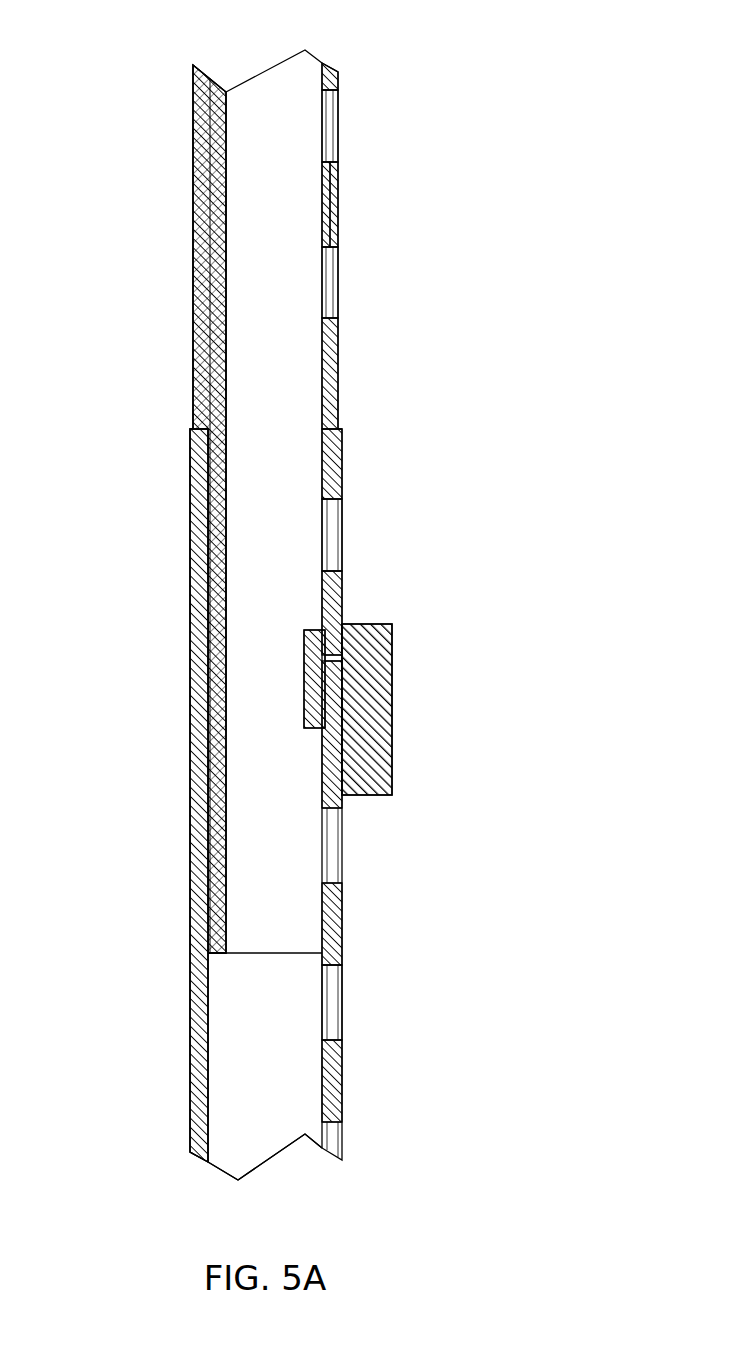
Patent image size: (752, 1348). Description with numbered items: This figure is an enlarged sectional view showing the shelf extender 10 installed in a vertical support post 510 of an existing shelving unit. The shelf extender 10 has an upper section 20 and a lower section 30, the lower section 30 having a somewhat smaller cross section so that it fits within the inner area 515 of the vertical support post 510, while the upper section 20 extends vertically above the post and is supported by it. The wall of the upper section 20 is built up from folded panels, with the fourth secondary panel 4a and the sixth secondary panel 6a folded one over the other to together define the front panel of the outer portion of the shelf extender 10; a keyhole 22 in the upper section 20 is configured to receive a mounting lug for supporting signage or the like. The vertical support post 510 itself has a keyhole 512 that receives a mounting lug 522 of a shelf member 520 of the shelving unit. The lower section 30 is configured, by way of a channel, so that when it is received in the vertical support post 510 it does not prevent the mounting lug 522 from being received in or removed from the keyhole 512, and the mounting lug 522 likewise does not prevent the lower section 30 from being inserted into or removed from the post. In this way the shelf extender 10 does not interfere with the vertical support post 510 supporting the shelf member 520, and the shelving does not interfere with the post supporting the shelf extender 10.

The shelf extender 10 is at (167, 143).
The upper section 20 is at (268, 71).
The fourth secondary panel 4a is at (322, 202).
The sixth secondary panel 6a is at (338, 177).
The keyhole 22 is at (340, 276).
The lower section 30 is at (289, 953).
The vertical support post 510 is at (190, 653).
The keyhole of the vertical support post 512 is at (343, 528).
The inner area 515 is at (262, 1123).
The shelf member 520 is at (394, 678).
The mounting lug 522 is at (304, 631).